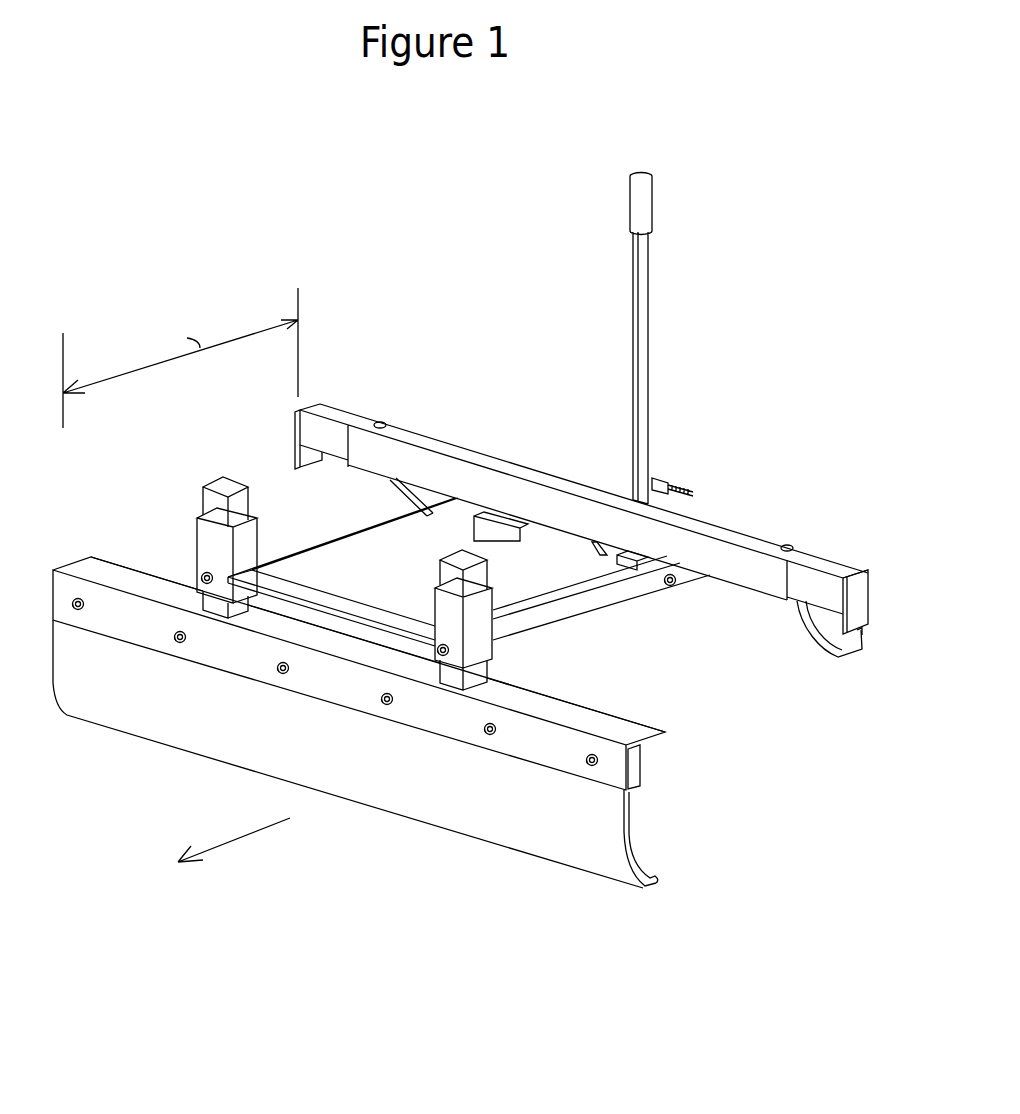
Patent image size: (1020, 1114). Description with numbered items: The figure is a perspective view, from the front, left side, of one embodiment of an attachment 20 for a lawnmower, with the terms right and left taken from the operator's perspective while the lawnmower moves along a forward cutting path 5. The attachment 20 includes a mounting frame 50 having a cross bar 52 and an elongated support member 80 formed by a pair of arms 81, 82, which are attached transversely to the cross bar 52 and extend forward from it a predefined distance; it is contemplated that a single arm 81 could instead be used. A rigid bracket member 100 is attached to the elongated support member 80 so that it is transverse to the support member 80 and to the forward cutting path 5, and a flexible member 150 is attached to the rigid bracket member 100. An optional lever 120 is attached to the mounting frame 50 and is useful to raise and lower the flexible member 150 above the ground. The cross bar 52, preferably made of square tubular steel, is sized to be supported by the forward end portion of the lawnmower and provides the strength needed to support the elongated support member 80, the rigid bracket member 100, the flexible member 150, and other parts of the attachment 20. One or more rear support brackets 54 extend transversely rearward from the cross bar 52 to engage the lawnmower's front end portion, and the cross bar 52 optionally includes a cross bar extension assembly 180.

The attachment 20 is at (278, 238).
The forward cutting path 5 is at (250, 836).
The mounting frame 50 is at (469, 573).
The cross bar 52 is at (599, 532).
The rear support bracket 54 is at (840, 646).
The elongated support member 80 is at (565, 588).
The arm 81 is at (320, 568).
The arm 82 is at (510, 627).
The rigid bracket member 100 is at (632, 730).
The lever 120 is at (644, 333).
The flexible member 150 is at (608, 843).
The cross bar extension assembly 180 is at (330, 412).